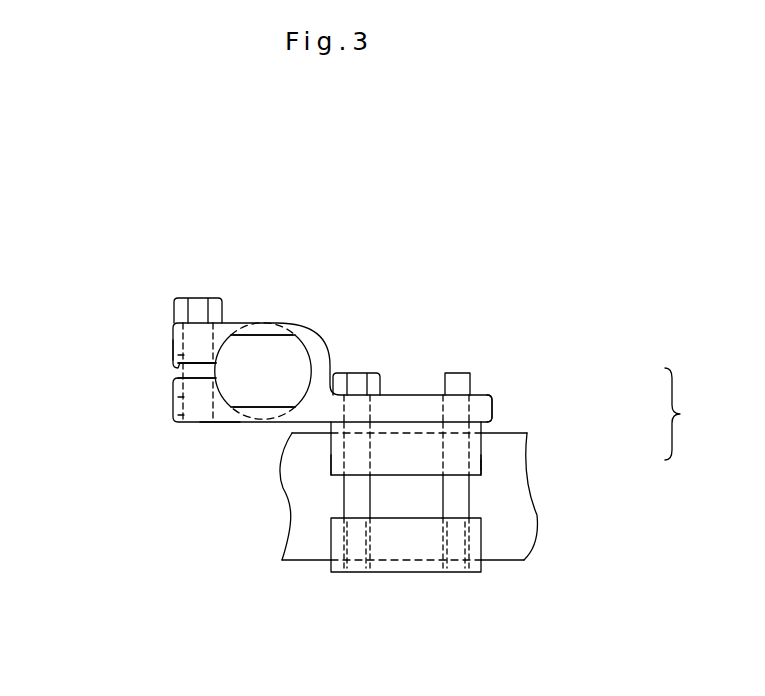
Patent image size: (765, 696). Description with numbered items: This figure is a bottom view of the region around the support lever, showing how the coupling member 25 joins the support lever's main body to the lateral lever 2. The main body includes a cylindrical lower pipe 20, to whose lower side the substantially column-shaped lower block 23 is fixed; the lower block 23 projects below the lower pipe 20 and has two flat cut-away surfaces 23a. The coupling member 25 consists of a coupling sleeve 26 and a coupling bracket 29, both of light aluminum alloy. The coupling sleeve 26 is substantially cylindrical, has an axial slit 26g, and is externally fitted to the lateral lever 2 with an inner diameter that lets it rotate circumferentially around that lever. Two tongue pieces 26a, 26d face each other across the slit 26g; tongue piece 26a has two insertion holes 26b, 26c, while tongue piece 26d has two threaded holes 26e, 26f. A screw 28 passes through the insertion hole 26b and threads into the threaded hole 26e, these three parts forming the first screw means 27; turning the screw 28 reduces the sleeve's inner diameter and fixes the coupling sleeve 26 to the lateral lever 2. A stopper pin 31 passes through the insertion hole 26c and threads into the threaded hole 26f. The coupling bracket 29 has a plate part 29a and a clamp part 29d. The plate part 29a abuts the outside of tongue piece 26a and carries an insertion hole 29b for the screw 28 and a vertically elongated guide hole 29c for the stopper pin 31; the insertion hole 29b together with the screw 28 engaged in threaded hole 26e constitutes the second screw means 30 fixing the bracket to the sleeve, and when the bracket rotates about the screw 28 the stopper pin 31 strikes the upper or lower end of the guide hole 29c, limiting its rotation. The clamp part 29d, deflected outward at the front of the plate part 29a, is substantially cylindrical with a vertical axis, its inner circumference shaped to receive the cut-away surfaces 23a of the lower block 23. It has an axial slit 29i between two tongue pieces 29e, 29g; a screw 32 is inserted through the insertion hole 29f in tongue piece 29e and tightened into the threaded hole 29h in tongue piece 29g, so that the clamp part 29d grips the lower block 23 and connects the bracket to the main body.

The lateral lever 2 is at (513, 538).
The lower pipe 20 is at (282, 303).
The lower block 23 is at (275, 353).
The cut-away surface 23a is at (248, 335).
The coupling member 25 is at (692, 414).
The coupling sleeve 26 is at (490, 448).
The tongue piece 26a is at (482, 472).
The insertion hole 26b is at (333, 462).
The insertion hole 26c is at (483, 462).
The tongue piece 26d is at (480, 538).
The threaded hole 26e is at (343, 540).
The threaded hole 26f is at (444, 538).
The slit 26g is at (400, 503).
The first screw means 27 is at (338, 498).
The screw 28 is at (375, 395).
The coupling bracket 29 is at (505, 403).
The plate part 29a is at (493, 396).
The insertion hole 29b is at (383, 397).
The guide hole 29c is at (482, 397).
The clamp part 29d is at (220, 428).
The tongue piece 29e is at (175, 338).
The insertion hole 29f is at (177, 355).
The tongue piece 29g is at (177, 397).
The threaded hole 29h is at (177, 415).
The slit 29i is at (178, 372).
The second screw means 30 is at (356, 373).
The stopper pin 31 is at (460, 508).
The screw 32 is at (198, 303).